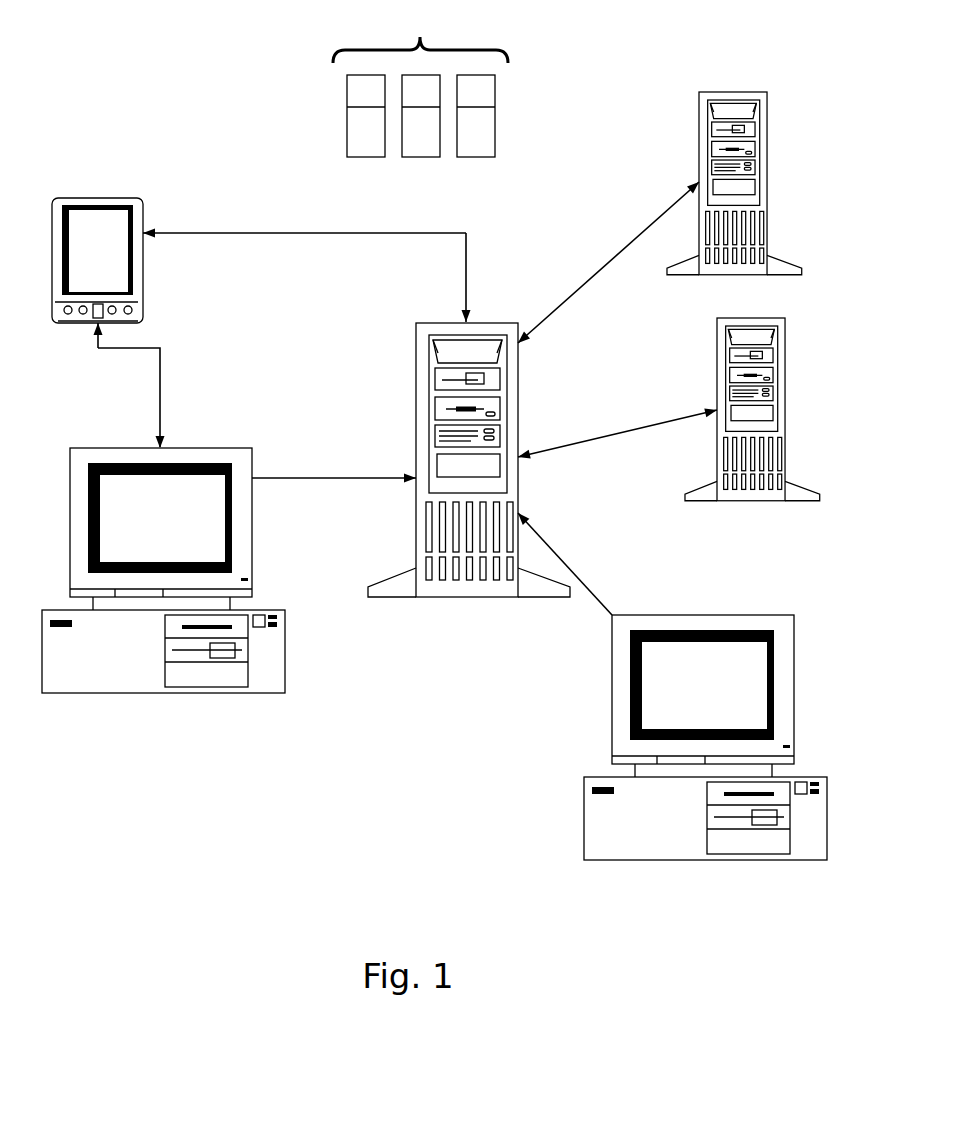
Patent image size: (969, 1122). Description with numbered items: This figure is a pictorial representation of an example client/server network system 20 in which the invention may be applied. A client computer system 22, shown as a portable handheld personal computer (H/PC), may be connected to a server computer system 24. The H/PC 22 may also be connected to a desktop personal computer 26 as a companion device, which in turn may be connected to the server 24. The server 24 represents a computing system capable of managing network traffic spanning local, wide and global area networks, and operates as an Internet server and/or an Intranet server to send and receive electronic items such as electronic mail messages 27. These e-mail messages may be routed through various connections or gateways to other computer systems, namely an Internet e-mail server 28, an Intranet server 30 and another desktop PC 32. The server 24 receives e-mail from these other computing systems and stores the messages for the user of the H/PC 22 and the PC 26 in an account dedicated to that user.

The client/server network system 20 is at (363, 800).
The client computer system 22 is at (67, 322).
The server computer system 24 is at (416, 415).
The desktop personal computer 26 is at (270, 667).
The electronic mail messages 27 is at (368, 152).
The Internet e-mail server 28 is at (780, 425).
The Intranet server 30 is at (762, 193).
The desktop PC 32 is at (620, 838).